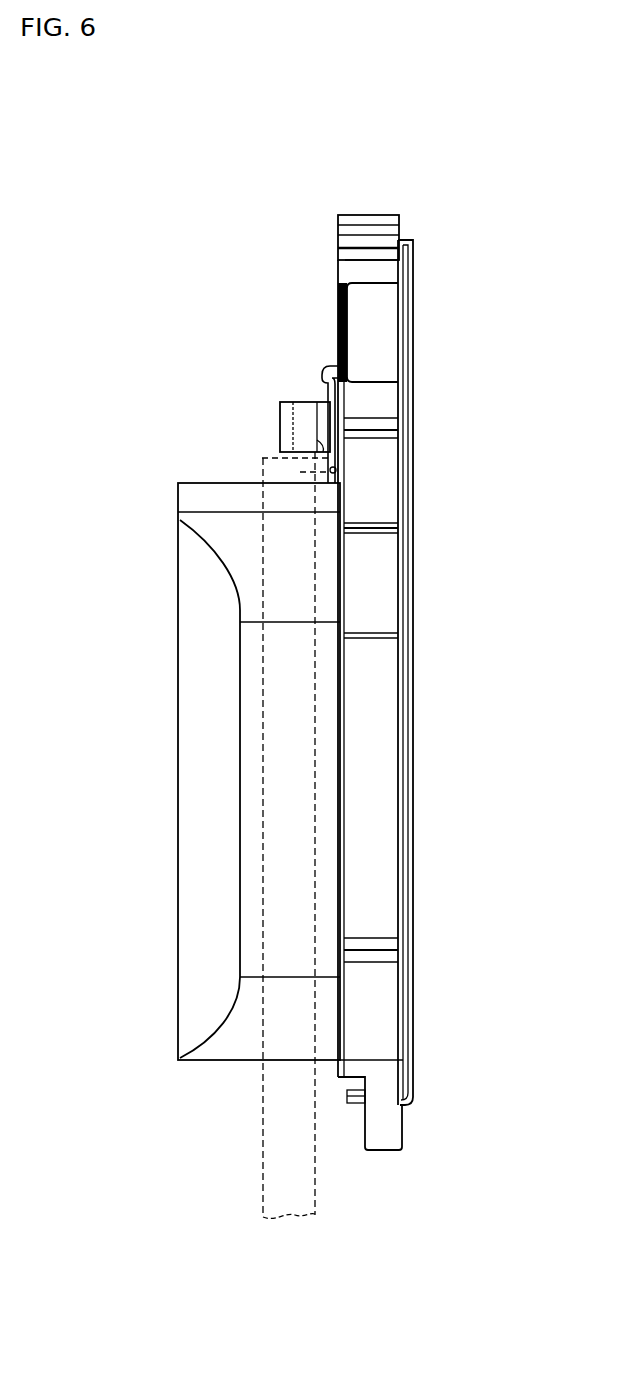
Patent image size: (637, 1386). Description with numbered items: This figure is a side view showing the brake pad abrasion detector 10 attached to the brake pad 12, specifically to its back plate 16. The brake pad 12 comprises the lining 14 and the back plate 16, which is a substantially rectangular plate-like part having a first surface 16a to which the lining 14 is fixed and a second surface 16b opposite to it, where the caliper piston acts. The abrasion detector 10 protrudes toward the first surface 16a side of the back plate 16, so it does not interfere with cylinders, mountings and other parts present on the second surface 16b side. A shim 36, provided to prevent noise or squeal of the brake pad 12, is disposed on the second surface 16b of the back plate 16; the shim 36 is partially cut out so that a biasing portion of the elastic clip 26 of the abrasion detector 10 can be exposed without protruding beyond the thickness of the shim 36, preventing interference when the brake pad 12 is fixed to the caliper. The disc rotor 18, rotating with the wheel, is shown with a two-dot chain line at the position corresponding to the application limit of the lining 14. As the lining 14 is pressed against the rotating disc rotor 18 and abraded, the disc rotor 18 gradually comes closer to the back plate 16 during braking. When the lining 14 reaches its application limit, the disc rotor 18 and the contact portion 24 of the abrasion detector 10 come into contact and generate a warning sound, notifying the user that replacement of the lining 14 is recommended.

The brake pad abrasion detector 10 is at (276, 404).
The brake pad 12 is at (377, 210).
The lining 14 is at (178, 668).
The back plate 16 is at (375, 788).
The first surface 16a is at (338, 280).
The second surface 16b is at (398, 222).
The disc rotor 18 is at (263, 1150).
The contact portion 24 is at (315, 470).
The elastic clip 26 is at (325, 376).
The shim 36 is at (413, 1022).